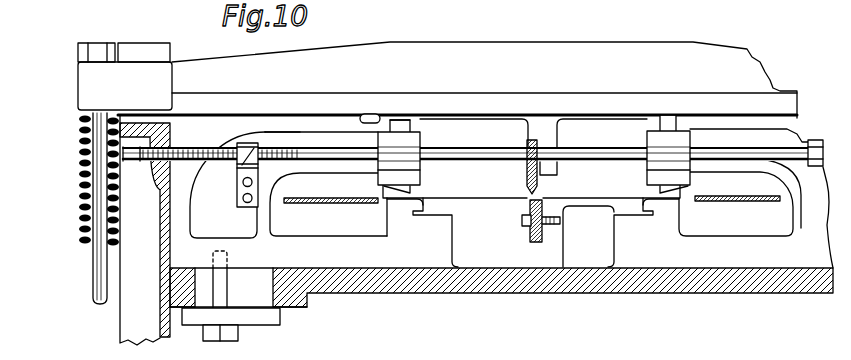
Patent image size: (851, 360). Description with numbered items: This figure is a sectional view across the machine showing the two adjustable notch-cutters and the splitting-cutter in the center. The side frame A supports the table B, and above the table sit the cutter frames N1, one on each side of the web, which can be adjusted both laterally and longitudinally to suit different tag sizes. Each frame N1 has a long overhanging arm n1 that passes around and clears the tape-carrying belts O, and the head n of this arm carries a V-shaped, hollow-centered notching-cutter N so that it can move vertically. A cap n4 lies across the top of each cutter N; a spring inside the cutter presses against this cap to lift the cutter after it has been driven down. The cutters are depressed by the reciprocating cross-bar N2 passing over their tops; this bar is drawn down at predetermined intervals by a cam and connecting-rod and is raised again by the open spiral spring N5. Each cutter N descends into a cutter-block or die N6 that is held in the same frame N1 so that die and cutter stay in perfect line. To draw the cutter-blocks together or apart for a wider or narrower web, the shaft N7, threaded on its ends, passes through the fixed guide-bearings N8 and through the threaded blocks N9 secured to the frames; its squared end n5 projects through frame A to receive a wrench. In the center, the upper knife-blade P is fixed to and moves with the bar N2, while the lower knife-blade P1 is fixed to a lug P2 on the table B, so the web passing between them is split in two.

The frame N1 is at (370, 255).
The cross-bar N2 is at (580, 30).
The overhanging arm n1 is at (276, 140).
The cap n4 is at (692, 83).
The open spiral spring N5 is at (78, 181).
The squared end of shaft n5 is at (134, 165).
The cutter-block or die N6 is at (692, 218).
The shaft N7 is at (587, 153).
The fixed guide-bearings N8 is at (400, 154).
The threaded blocks N9 is at (817, 128).
The notching-cutter N is at (407, 188).
The head n is at (423, 172).
The upper knife-blade P is at (526, 177).
The lower knife-blade P1 is at (528, 235).
The lug P2 is at (553, 240).
The tape-carrying belts O is at (317, 197).
The side frame A is at (127, 330).
The table B is at (545, 294).